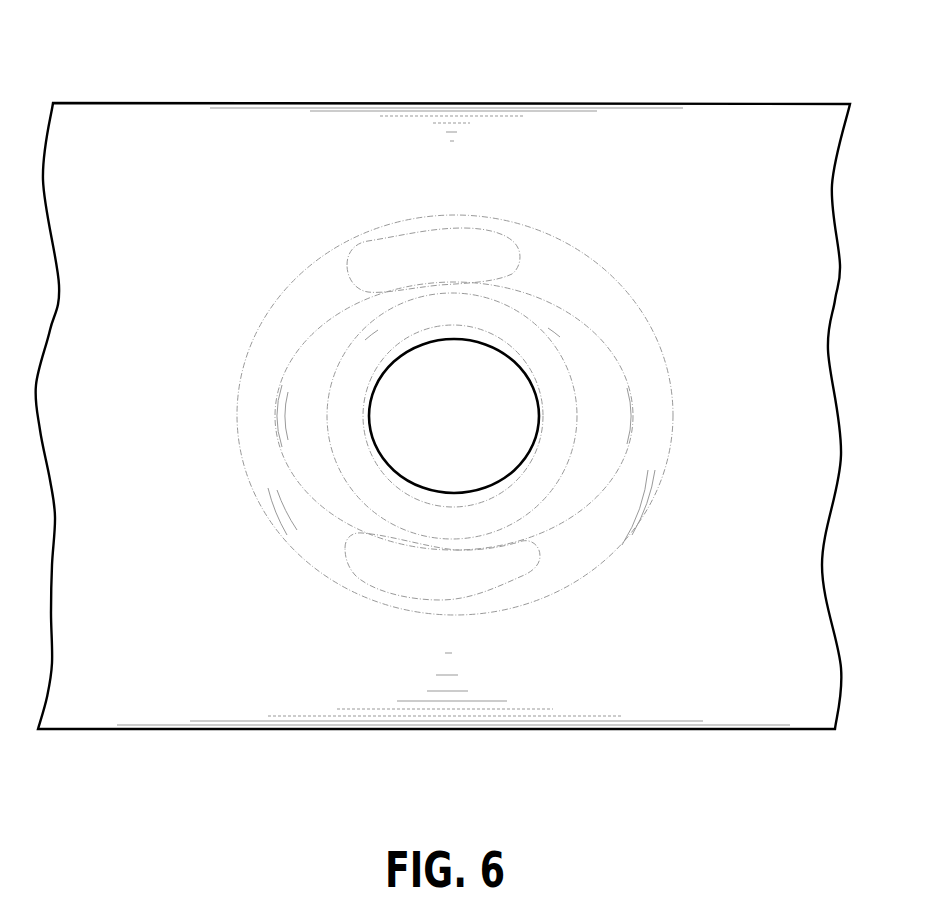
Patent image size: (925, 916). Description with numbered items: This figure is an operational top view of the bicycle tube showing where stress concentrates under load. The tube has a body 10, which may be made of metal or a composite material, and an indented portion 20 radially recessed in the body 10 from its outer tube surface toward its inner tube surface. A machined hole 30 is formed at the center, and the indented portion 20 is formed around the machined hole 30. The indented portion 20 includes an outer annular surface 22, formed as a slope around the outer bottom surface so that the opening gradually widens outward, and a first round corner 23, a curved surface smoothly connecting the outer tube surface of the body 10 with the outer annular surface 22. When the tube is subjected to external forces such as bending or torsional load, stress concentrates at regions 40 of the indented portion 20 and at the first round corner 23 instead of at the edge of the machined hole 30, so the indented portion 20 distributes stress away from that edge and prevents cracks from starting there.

The body 10 is at (688, 87).
The indented portion 20 is at (443, 397).
The outer annular surface 22 is at (605, 413).
The first round corner 23 is at (583, 283).
The machined hole 30 is at (390, 357).
The regions 40 is at (465, 250).